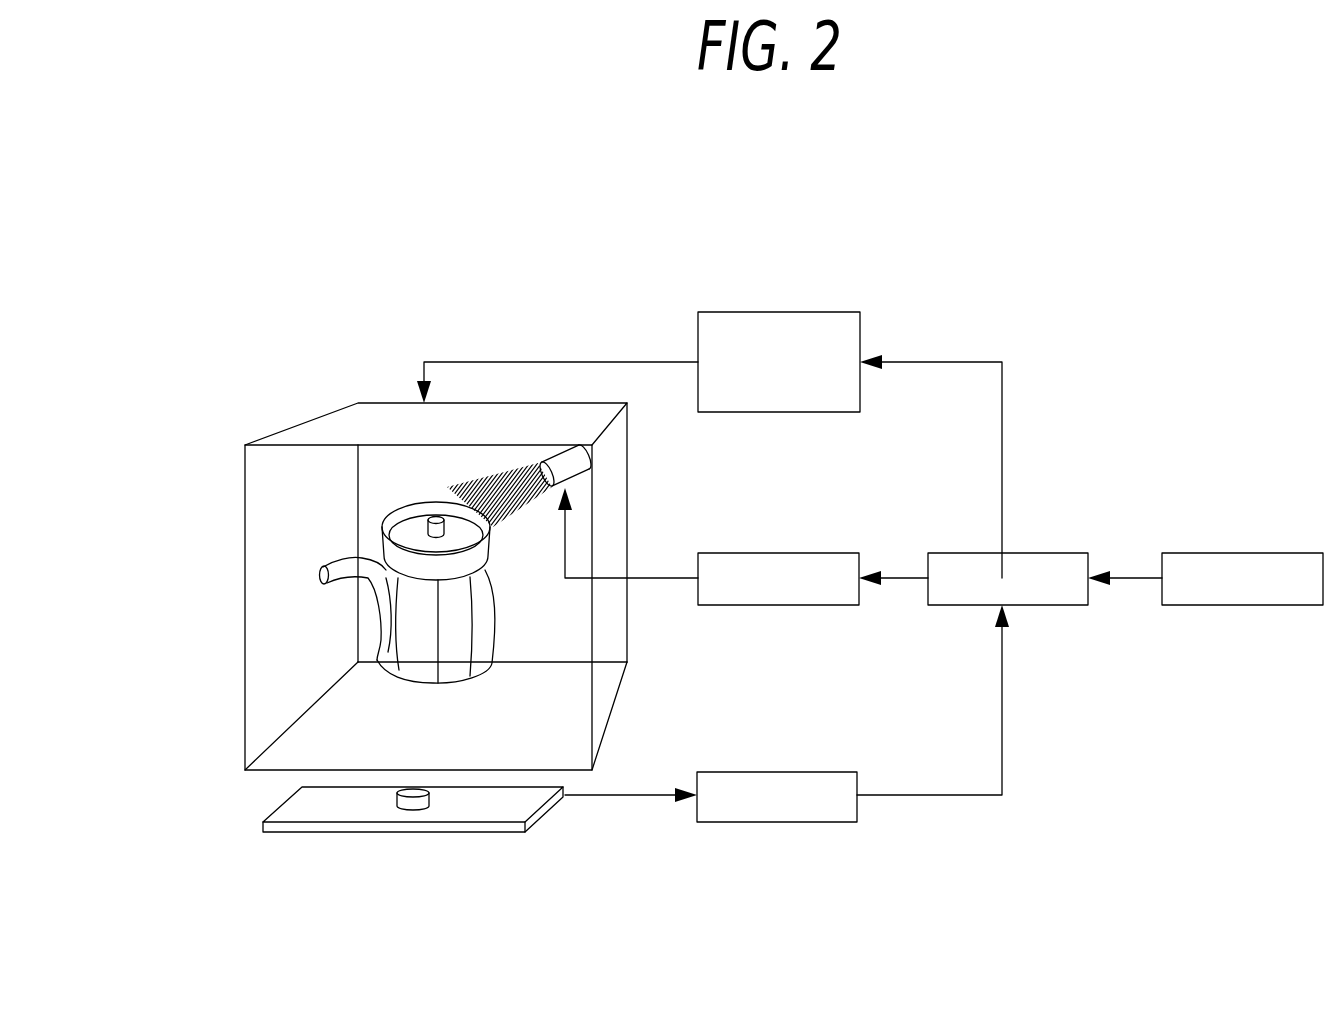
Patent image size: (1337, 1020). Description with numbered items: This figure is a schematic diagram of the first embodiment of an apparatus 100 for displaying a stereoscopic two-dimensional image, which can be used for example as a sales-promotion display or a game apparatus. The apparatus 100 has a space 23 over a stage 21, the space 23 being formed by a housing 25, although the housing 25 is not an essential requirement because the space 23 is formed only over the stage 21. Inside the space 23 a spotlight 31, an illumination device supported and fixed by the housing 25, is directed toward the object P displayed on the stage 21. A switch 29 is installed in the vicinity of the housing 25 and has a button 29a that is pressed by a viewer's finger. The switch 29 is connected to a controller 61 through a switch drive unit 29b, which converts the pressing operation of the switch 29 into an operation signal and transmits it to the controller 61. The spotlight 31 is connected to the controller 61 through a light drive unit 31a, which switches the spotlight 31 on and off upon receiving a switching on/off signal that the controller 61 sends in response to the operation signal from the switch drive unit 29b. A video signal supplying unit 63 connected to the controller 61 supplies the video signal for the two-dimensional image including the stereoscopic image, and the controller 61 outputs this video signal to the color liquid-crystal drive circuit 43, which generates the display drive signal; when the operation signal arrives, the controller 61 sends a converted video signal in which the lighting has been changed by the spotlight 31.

The apparatus for displaying stereoscopic two-dimensional image 100 is at (696, 251).
The stage 21 is at (327, 743).
The space 23 is at (290, 492).
The housing 25 is at (245, 635).
The object to be photographed P is at (408, 503).
The switch 29 is at (495, 832).
The button 29a is at (390, 800).
The switch drive unit 29b is at (823, 822).
The spotlight 31 is at (575, 470).
The light drive unit 31a is at (832, 553).
The color liquid-crystal drive circuit 43 is at (835, 312).
The controller 61 is at (1068, 553).
The video signal supplying unit 63 is at (1293, 553).